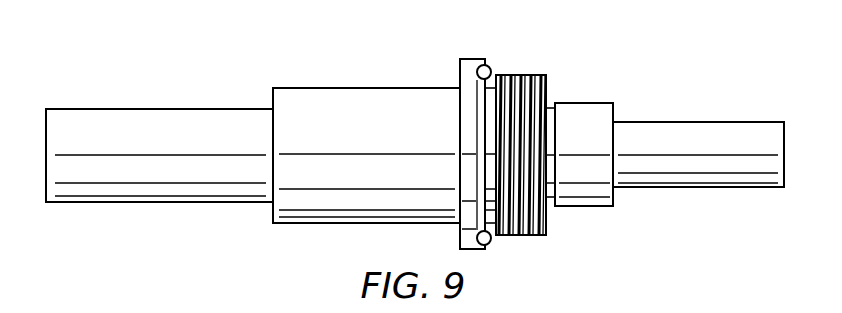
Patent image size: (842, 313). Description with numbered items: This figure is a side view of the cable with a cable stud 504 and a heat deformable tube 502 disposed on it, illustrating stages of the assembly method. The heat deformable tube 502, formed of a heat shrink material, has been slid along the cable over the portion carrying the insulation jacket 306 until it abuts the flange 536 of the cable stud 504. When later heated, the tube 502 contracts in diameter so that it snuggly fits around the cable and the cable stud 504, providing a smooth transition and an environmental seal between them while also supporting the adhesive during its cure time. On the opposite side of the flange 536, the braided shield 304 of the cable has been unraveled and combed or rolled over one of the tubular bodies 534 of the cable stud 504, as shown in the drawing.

The insulation jacket 306 is at (167, 107).
The heat deformable tube 502 is at (360, 84).
The flange 536 is at (467, 57).
The cable stud 504 is at (503, 70).
The tubular body 534 is at (550, 197).
The braided shield 304 is at (590, 96).